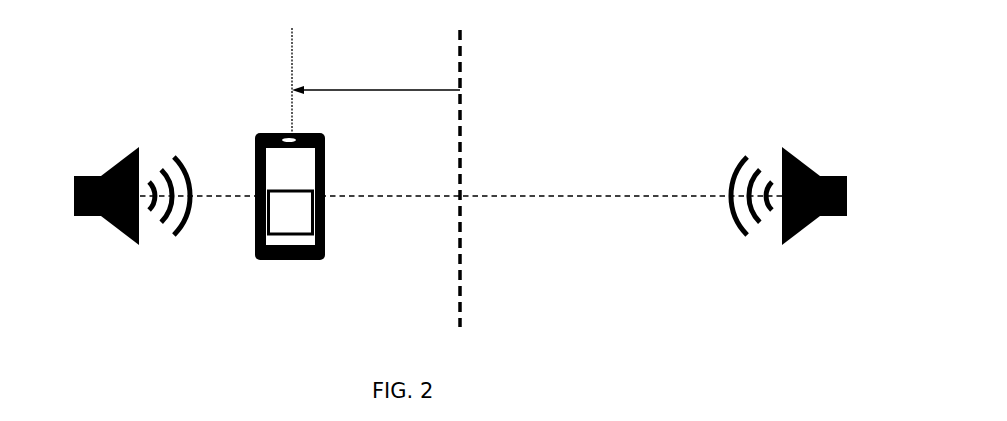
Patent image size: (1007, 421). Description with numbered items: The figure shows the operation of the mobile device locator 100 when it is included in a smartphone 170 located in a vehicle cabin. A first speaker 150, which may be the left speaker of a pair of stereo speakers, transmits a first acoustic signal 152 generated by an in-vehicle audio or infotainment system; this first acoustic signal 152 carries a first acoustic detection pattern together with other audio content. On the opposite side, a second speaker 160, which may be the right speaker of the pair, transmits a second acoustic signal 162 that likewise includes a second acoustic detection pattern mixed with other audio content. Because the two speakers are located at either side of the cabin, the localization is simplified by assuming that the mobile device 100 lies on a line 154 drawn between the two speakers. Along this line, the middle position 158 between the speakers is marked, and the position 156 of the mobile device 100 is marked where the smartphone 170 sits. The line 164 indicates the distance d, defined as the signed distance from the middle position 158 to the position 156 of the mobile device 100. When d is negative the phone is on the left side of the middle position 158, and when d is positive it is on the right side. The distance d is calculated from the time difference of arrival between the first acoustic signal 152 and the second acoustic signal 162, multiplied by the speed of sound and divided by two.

The mobile device locator 100 is at (280, 221).
The first speaker 150 is at (100, 215).
The first acoustic signal 152 is at (177, 160).
The line between the two speakers 154 is at (377, 198).
The position of the mobile device 156 is at (290, 60).
The middle position between the speakers 158 is at (462, 112).
The second speaker 160 is at (794, 236).
The second acoustic signal 162 is at (737, 170).
The line indicating distance d 164 is at (364, 91).
The smartphone 170 is at (262, 218).